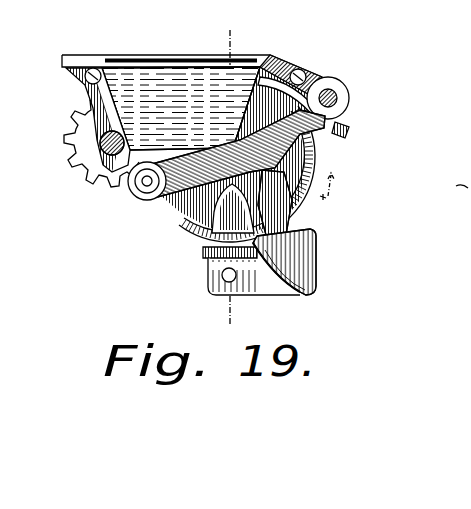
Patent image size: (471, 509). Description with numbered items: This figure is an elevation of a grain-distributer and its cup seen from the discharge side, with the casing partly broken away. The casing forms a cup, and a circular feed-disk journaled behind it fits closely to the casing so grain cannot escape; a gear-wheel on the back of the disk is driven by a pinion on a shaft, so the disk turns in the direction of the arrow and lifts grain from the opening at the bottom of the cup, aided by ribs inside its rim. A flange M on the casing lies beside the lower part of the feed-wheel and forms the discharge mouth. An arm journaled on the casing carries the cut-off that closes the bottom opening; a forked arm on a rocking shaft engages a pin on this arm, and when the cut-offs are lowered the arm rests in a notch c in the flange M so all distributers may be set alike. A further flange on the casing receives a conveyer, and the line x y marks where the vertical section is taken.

The flange M is at (283, 250).
The notch c is at (297, 131).
The section line x is at (230, 35).
The section line y is at (229, 320).